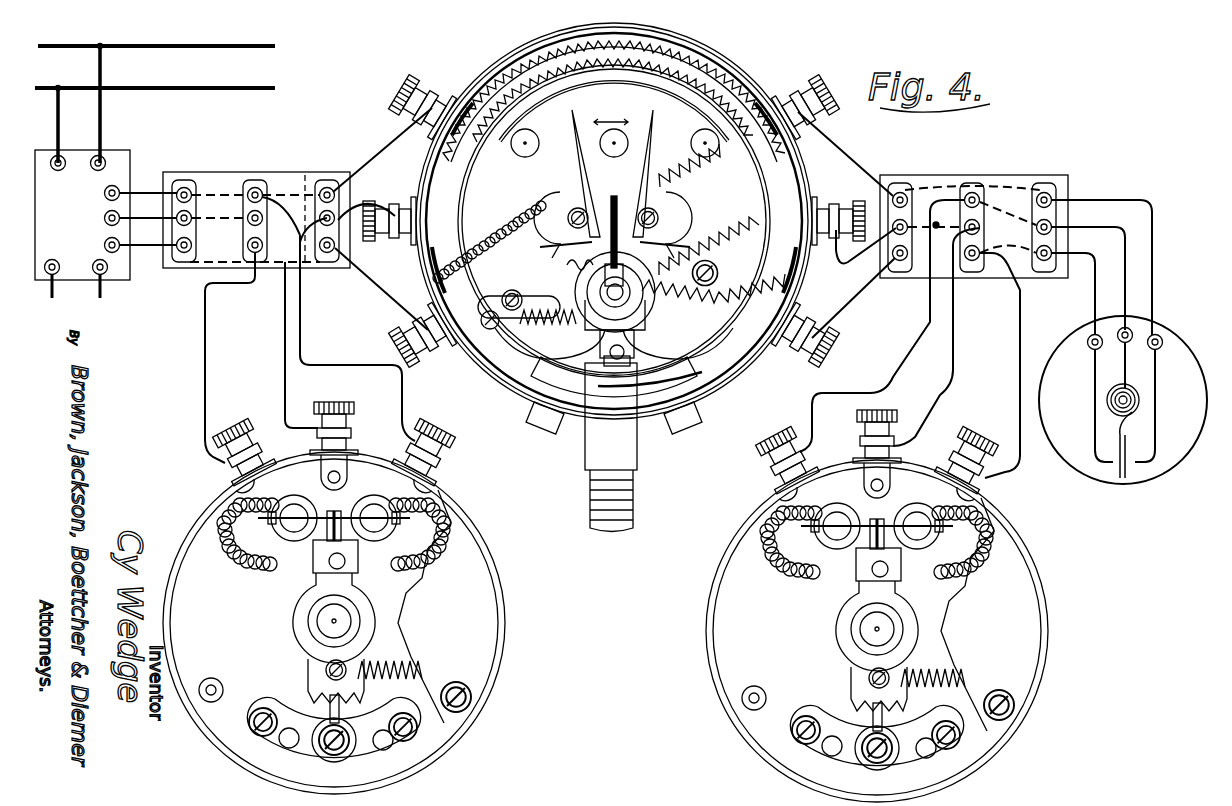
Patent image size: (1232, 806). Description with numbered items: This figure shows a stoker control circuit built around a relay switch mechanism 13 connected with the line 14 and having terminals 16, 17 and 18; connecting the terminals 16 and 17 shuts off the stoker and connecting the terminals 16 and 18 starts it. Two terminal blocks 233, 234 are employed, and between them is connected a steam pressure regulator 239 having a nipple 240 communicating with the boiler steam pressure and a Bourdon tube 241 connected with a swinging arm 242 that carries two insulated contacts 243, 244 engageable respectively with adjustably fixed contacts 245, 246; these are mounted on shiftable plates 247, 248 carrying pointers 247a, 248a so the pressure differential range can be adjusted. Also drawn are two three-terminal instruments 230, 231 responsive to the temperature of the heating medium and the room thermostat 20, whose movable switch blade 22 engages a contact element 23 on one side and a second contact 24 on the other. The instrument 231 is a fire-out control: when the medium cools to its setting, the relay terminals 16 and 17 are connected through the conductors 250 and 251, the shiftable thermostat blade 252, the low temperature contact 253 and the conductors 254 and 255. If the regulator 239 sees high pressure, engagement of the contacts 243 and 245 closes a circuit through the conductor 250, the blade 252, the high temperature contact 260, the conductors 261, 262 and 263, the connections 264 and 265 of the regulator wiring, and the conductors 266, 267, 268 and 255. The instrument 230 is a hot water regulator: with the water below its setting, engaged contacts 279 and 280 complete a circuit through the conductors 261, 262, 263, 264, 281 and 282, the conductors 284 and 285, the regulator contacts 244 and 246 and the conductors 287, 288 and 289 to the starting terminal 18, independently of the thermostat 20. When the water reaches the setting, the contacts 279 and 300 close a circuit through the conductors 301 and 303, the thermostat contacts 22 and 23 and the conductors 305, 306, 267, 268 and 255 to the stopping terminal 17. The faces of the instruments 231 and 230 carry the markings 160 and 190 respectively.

The line 14 is at (124, 88).
The relay terminal 16 is at (104, 222).
The relay terminal 17 is at (122, 187).
The relay switch mechanism 13 is at (66, 278).
The relay terminal 18 is at (116, 255).
The conductor 255 is at (150, 190).
The conductor 250 is at (147, 222).
The terminal block 233 is at (222, 180).
The conductor 262 is at (306, 180).
The conductor 289 is at (267, 278).
The conductor 268 is at (380, 158).
The conductor 263 is at (370, 192).
The conductor 288 is at (390, 290).
The steam pressure regulator 239 is at (746, 80).
The Bourdon tube 241 is at (470, 178).
The conductor 267 is at (690, 55).
The connection 264 is at (497, 100).
The pointer 248a is at (582, 126).
The pointer 247a is at (652, 142).
The insulated contact 243 is at (614, 205).
The insulated contact 244 is at (602, 192).
The adjustably fixed contact 246 is at (587, 203).
The adjustably fixed contact 245 is at (640, 205).
The conductor 287 is at (489, 238).
The conductor 266 is at (692, 192).
The shiftable plate 247 is at (660, 258).
The connection 265 is at (713, 282).
The shiftable plate 248 is at (572, 252).
The swinging arm 242 is at (585, 262).
The nipple 240 is at (600, 462).
The conductor 306 is at (866, 172).
The conductor 281 is at (868, 258).
The conductor 285 is at (872, 300).
The terminal block 234 is at (1020, 177).
The conductor 305 is at (1142, 200).
The conductor 303 is at (1098, 269).
The room thermostat 20 is at (1081, 478).
The movable switch blade 22 is at (1122, 482).
The contact element 23 is at (1133, 463).
The second contact 24 is at (1113, 465).
The conductor 261 is at (206, 462).
The conductor 251 is at (286, 400).
The conductor 254 is at (405, 372).
The conductor 301 is at (822, 400).
The conductor 282 is at (957, 388).
The conductor 284 is at (996, 365).
The fire-out control instrument 231 is at (358, 598).
The high temperature contact 260 is at (267, 533).
The low temperature contact 253 is at (401, 533).
The shiftable thermostat blade 252 is at (352, 601).
The left meter 160 is at (444, 606).
The hot water regulator 230 is at (915, 606).
The contact 300 is at (810, 541).
The contact 280 is at (944, 541).
The contact 279 is at (877, 585).
The right meter 190 is at (985, 614).